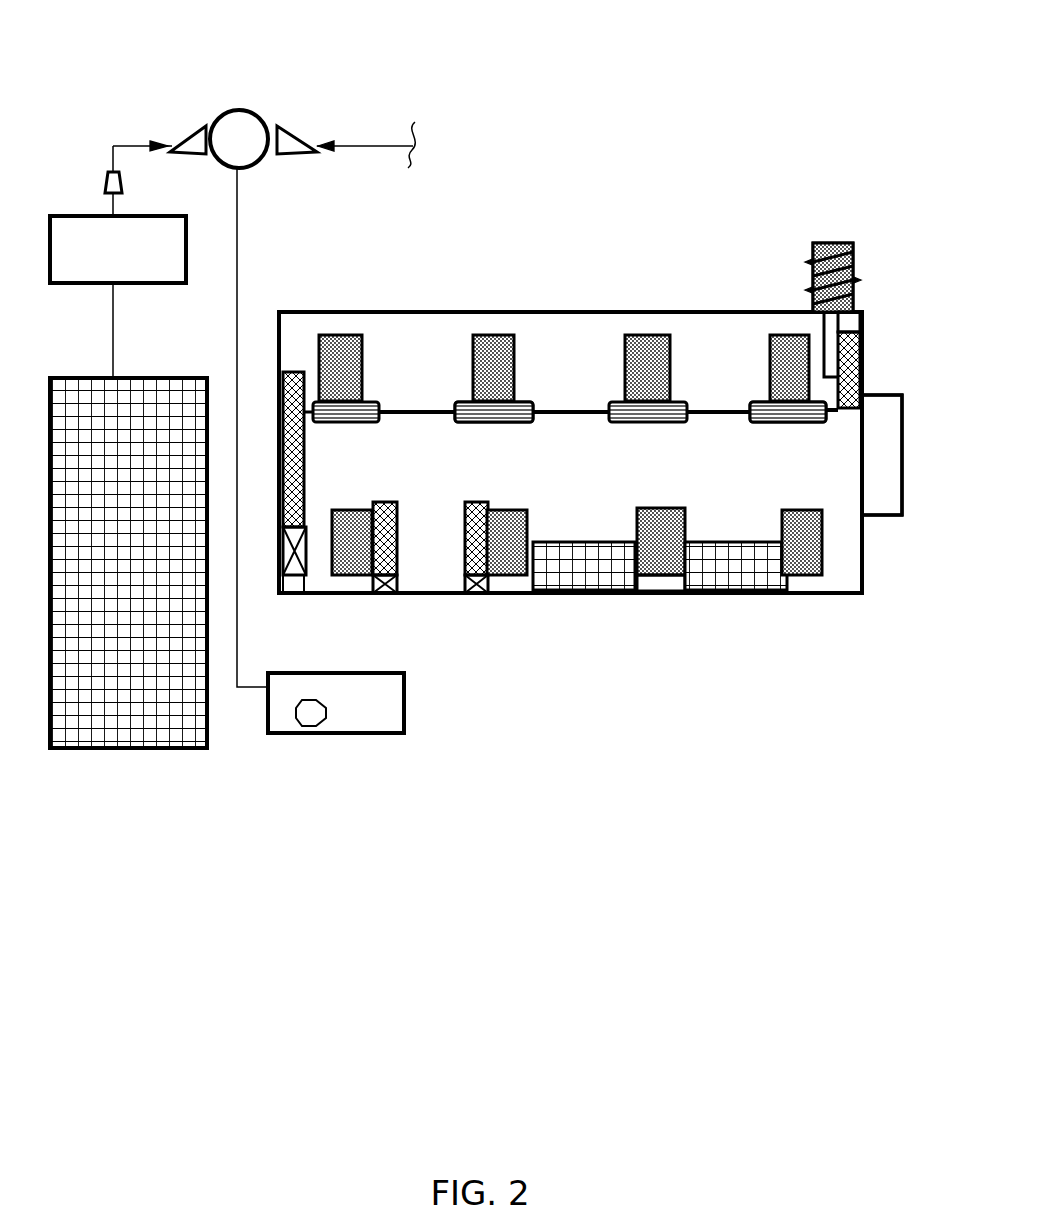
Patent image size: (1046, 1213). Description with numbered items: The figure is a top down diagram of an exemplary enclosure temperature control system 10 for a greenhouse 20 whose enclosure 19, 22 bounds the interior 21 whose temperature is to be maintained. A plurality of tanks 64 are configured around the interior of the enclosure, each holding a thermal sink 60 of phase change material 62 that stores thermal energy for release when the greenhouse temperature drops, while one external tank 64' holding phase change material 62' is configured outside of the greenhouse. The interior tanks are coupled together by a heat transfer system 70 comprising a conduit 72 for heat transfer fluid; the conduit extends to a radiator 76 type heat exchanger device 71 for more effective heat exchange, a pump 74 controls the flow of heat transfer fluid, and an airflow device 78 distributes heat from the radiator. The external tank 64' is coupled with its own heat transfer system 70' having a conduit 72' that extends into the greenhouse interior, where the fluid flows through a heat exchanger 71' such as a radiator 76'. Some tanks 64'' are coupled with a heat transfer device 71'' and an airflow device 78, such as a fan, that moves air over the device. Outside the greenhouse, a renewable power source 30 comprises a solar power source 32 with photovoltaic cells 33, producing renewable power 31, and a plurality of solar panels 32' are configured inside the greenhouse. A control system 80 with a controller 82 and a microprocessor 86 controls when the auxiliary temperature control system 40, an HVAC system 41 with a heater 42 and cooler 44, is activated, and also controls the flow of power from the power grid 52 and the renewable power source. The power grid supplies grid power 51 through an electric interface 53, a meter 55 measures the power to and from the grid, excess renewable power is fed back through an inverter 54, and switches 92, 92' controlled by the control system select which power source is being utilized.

The enclosure temperature control system 10 is at (573, 182).
The enclosure 19 is at (431, 312).
The greenhouse 20 is at (734, 331).
The interior 21 is at (566, 338).
The enclosure 22 is at (643, 313).
The renewable power source 30 is at (110, 748).
The renewable power 31 is at (588, 592).
The solar power source 32 is at (128, 532).
The solar panels 32' is at (727, 581).
The photovoltaic cells 33 is at (166, 740).
The auxiliary temperature control system 40 is at (888, 410).
The HVAC system 41 is at (895, 490).
The heater 42 is at (884, 508).
The cooler 44 is at (888, 445).
The grid power 51 is at (323, 141).
The power grid 52 is at (380, 138).
The electric interface 53 is at (155, 228).
The inverter 54 is at (112, 175).
The meter 55 is at (243, 124).
The thermal sink 60 is at (340, 345).
The phase change material 62 is at (509, 329).
The phase change material 62' is at (847, 231).
The tank 64 is at (608, 424).
The external tank 64' is at (804, 236).
The tank 64'' is at (496, 518).
The heat transfer system 70 is at (635, 405).
The heat transfer system 70' is at (860, 256).
The heat exchanger device 71 is at (656, 434).
The heat exchanger 71' is at (866, 358).
The heat transfer device 71'' is at (419, 536).
The conduit 72 is at (510, 435).
The conduit 72' is at (860, 288).
The pump 74 is at (286, 593).
The radiator 76 is at (565, 488).
The radiator 76' is at (801, 401).
The airflow device 78 is at (466, 580).
The control system 80 is at (354, 690).
The controller 82 is at (390, 706).
The microprocessor 86 is at (318, 728).
The switch 92 is at (188, 109).
The switch 92' is at (297, 176).